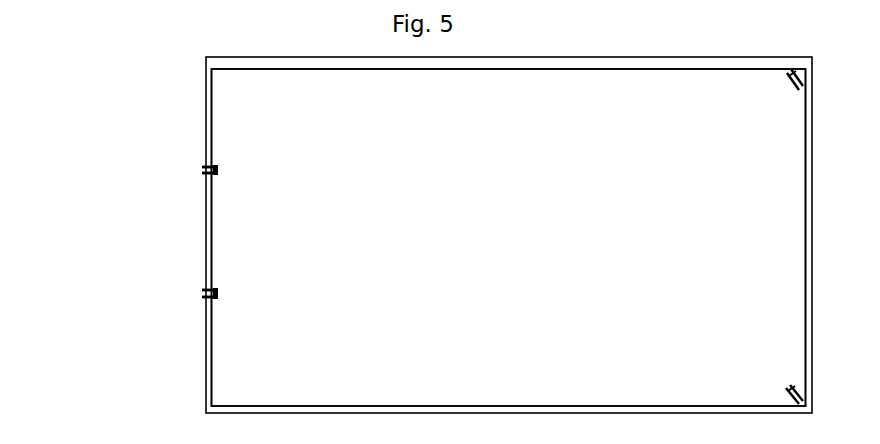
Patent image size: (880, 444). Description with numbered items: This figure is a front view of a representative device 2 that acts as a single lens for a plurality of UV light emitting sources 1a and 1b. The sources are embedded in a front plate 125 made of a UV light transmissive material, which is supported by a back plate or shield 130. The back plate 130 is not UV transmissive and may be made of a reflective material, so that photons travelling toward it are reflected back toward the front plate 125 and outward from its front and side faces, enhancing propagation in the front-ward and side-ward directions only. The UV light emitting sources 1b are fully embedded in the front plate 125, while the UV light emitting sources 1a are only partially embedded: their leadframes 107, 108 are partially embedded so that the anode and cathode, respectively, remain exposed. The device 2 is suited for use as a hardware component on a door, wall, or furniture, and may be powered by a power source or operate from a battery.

The device 2 is at (138, 333).
The back plate 130 is at (596, 62).
The front plate 125 is at (537, 247).
The leadframe 107 is at (185, 187).
The leadframe 108 is at (185, 267).
The UV light emitting source 1a is at (226, 168).
The UV light emitting source 1b is at (804, 88).